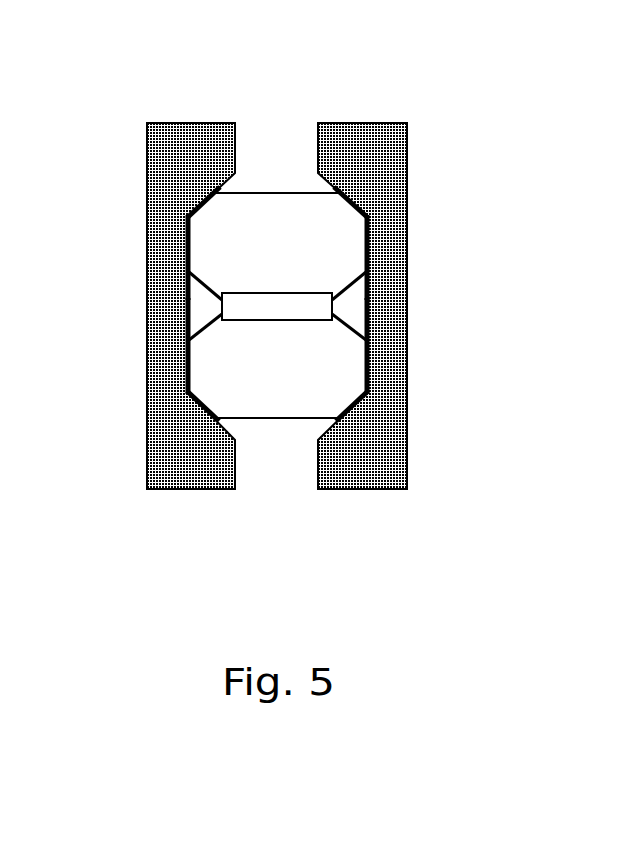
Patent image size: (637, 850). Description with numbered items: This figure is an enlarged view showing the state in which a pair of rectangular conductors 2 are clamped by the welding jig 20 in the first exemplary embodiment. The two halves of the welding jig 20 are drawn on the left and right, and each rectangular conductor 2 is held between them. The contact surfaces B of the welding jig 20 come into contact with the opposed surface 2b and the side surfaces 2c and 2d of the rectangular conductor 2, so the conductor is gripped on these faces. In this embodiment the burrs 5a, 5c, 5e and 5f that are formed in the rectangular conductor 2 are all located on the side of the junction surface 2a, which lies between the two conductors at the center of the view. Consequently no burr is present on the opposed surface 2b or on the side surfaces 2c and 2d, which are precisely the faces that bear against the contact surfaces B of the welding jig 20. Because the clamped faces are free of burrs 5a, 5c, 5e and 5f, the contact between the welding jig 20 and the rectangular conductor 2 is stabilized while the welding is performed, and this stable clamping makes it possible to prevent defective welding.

The welding jig 20 is at (164, 106).
The rectangular conductor 2 is at (265, 205).
The junction surface 2a is at (283, 291).
The opposed surface 2b is at (297, 186).
The side surface 2c is at (193, 239).
The side surface 2d is at (362, 239).
The burr 5a is at (342, 306).
The burr 5c is at (213, 306).
The burr 5e is at (178, 279).
The burr 5f is at (377, 279).
The contact surface B is at (171, 372).